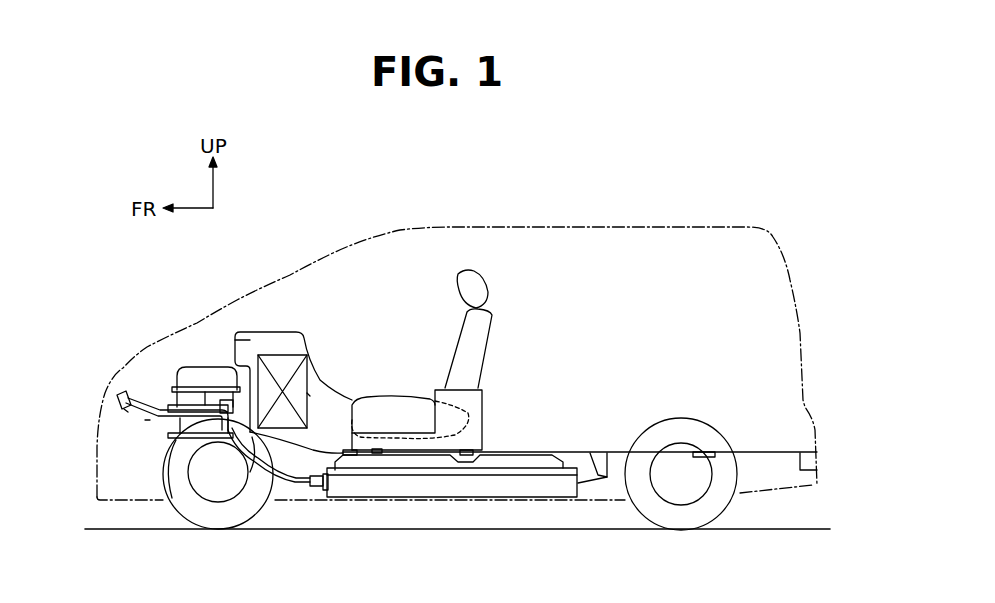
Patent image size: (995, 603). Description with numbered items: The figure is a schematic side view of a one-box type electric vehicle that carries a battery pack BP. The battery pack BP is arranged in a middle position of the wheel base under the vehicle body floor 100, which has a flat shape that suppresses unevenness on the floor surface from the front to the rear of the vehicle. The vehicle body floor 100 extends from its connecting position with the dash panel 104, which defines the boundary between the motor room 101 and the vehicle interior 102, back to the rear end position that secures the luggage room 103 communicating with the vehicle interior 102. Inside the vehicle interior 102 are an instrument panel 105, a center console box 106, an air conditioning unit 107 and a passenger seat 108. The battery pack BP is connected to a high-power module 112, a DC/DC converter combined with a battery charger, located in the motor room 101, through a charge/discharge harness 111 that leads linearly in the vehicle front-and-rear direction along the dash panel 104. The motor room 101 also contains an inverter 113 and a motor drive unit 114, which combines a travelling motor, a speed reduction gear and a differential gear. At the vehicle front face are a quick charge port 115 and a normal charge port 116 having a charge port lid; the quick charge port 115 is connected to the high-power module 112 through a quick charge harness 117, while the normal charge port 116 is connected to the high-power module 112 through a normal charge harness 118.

The vehicle body floor 100 is at (572, 450).
The motor room 101 is at (146, 497).
The vehicle interior 102 is at (417, 307).
The luggage room 103 is at (673, 308).
The dash panel 104 is at (268, 365).
The instrument panel 105 is at (306, 338).
The center console box 106 is at (388, 430).
The air conditioning unit 107 is at (307, 393).
The passenger seat 108 is at (492, 333).
The charge/discharge harness 111 is at (270, 490).
The high-power module 112 is at (193, 367).
The inverter 113 is at (204, 400).
The motor drive unit 114 is at (180, 482).
The quick charge port 115 is at (118, 394).
The normal charge port 116 is at (122, 412).
The quick charge harness 117 is at (147, 403).
The normal charge harness 118 is at (147, 425).
The battery pack BP is at (461, 497).